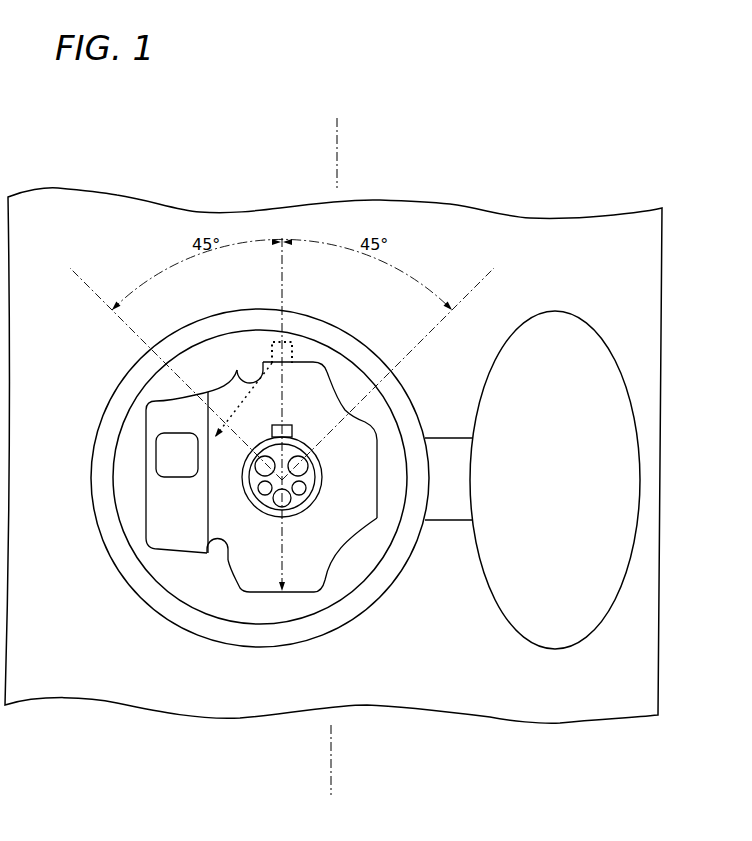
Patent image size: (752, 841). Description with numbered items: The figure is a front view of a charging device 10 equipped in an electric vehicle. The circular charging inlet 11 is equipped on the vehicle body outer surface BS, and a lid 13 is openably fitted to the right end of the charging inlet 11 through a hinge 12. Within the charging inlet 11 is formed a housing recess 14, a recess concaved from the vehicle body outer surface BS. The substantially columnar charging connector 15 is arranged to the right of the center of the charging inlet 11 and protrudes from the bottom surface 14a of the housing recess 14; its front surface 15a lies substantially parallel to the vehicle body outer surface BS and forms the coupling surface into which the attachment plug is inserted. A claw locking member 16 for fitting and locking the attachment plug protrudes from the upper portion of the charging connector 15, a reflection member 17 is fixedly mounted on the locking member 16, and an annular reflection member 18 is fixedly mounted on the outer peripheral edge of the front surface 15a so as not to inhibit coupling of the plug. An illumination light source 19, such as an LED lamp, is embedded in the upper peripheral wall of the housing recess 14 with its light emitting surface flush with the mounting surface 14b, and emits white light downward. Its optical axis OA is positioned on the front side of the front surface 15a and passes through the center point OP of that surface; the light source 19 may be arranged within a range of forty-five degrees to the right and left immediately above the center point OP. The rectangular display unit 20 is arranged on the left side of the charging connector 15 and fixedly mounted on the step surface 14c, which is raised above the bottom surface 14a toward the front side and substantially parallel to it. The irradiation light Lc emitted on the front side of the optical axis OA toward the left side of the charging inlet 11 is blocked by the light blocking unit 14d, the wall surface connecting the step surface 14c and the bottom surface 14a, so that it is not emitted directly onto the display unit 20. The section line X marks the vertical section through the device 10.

The charging device 10 is at (626, 107).
The charging inlet 11 is at (112, 407).
The hinge 12 is at (450, 518).
The lid 13 is at (554, 647).
The housing recess 14 is at (299, 469).
The bottom surface 14a is at (365, 455).
The mounting surface 14b is at (237, 366).
The step surface 14c is at (194, 527).
The light blocking unit 14d is at (220, 563).
The charging connector 15 is at (344, 537).
The front surface 15a is at (293, 503).
The locking member 16 is at (339, 368).
The reflection member 17 is at (290, 425).
The reflection member 18 is at (263, 512).
The illumination light source 19 is at (292, 342).
The display unit 20 is at (160, 452).
The vehicle body outer surface BS is at (575, 218).
The center point OP is at (296, 478).
The optical axis OA is at (297, 414).
The irradiation light Lc is at (243, 414).
The section line X is at (340, 130).